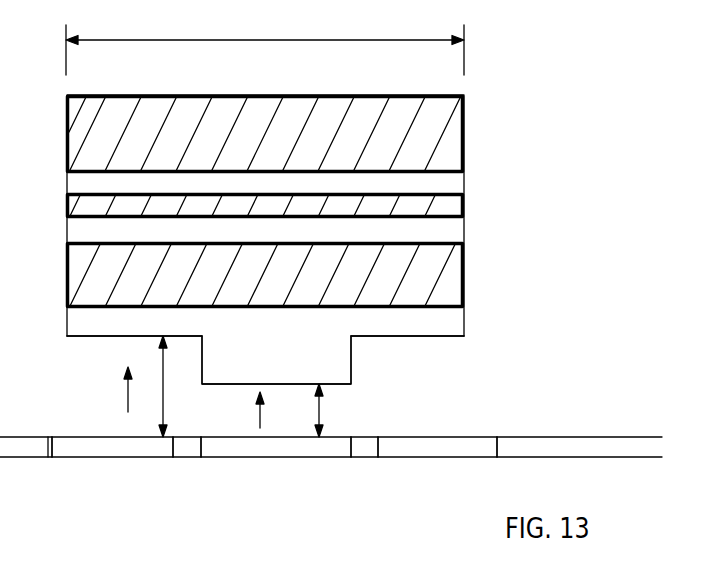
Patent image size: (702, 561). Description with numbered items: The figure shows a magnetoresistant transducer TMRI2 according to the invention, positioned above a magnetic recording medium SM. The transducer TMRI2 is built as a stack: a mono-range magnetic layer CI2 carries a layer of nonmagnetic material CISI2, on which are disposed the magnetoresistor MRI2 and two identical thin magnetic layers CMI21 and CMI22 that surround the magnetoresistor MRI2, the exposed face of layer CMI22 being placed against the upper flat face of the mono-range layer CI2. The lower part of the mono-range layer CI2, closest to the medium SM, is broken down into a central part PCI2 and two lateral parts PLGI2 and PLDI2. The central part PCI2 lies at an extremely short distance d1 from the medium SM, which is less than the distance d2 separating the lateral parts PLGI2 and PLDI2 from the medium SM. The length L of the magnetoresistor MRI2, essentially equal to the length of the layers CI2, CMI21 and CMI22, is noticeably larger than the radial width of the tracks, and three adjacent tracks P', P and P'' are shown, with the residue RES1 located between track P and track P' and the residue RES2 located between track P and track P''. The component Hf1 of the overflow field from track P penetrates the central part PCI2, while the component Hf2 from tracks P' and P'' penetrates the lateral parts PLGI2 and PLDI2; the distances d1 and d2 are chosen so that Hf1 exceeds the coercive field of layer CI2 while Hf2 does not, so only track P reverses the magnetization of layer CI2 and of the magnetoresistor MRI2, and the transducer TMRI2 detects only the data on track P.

The transducer TMRI2 is at (562, 100).
The thin magnetic layer CMI21 is at (464, 140).
The magnetoresistor MRI2 is at (464, 207).
The layer of nonmagnetic material CISI2 is at (464, 232).
The thin magnetic layer CMI22 is at (464, 270).
The mono-range magnetic layer CI2 is at (464, 322).
The lateral part PLGI2 is at (88, 333).
The central part PCI2 is at (190, 363).
The lateral part PLDI2 is at (395, 336).
The magnetic recording medium SM is at (594, 473).
The track P' is at (112, 470).
The residue RES1 is at (183, 457).
The track P is at (276, 470).
The residue RES2 is at (367, 457).
The track P'' is at (437, 470).
The length of the magnetoresistor L is at (265, 45).
The distance d1 is at (330, 410).
The distance d2 is at (173, 386).
The component of the magnetic overflow field Hf1 is at (242, 411).
The component of the magnetic overflow field Hf2 is at (240, 387).